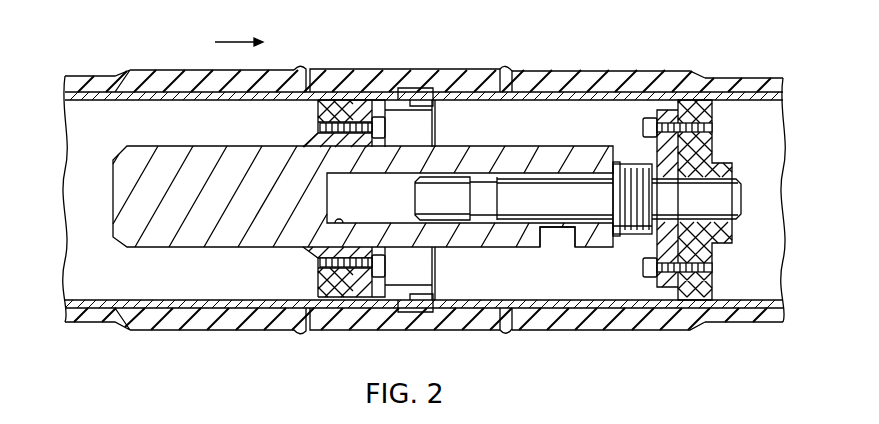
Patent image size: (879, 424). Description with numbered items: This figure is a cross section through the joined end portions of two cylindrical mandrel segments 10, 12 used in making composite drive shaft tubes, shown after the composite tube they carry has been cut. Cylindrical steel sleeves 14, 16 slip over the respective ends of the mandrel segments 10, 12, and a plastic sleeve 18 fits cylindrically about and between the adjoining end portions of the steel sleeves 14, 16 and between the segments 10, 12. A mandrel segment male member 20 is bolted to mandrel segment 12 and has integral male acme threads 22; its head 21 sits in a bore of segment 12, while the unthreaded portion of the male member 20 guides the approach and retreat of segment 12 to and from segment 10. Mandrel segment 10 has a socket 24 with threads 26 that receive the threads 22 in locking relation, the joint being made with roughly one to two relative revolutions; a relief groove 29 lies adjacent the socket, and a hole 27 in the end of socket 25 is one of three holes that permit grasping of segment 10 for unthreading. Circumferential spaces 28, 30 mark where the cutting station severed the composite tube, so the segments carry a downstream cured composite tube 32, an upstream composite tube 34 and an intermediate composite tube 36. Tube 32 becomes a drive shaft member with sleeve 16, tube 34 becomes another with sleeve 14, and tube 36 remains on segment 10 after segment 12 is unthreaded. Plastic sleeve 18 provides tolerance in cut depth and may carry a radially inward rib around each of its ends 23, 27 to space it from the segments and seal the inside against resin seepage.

The mandrel segment 10 is at (80, 85).
The mandrel segment 12 is at (727, 93).
The cylindrical steel sleeve 14 is at (165, 88).
The cylindrical steel sleeve 16 is at (640, 88).
The plastic sleeve 18 is at (403, 90).
The mandrel segment male member 20 is at (552, 193).
The bolt head 21 is at (443, 195).
The male acme threads 22 is at (635, 163).
The end of plastic sleeve 23 is at (293, 80).
The socket 24 is at (318, 258).
The socket 25 is at (504, 237).
The threads 26 is at (635, 240).
The hole 27 is at (508, 85).
The circumferential space 28 is at (308, 85).
The groove 29 is at (567, 230).
The circumferential space 30 is at (502, 75).
The downstream cured composite tube 32 is at (742, 313).
The upstream composite tube 34 is at (83, 310).
The intermediate composite tube 36 is at (345, 322).